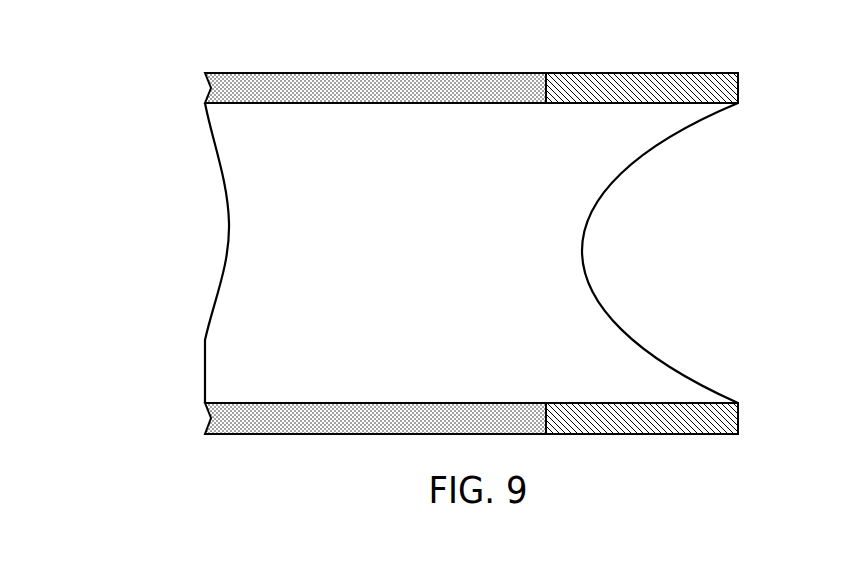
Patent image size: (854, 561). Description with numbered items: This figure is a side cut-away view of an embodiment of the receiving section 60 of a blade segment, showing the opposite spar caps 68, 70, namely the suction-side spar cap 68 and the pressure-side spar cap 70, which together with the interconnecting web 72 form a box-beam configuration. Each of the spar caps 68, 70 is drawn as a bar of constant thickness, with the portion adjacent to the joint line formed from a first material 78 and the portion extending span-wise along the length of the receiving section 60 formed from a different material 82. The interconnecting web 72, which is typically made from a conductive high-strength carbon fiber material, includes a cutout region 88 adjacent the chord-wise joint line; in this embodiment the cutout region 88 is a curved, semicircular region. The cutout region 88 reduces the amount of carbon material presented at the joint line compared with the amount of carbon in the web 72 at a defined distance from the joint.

The receiving section 60 is at (124, 101).
The spar cap 68 is at (243, 427).
The spar cap 70 is at (272, 73).
The interconnecting web 72 is at (237, 233).
The first material 78 is at (682, 82).
The different material 82 is at (363, 410).
The cutout region 88 is at (582, 248).